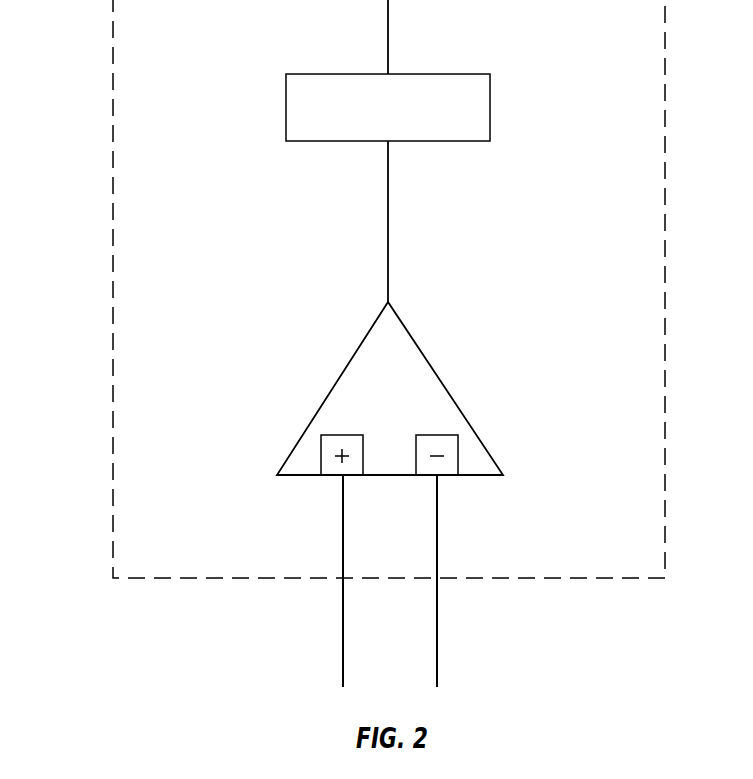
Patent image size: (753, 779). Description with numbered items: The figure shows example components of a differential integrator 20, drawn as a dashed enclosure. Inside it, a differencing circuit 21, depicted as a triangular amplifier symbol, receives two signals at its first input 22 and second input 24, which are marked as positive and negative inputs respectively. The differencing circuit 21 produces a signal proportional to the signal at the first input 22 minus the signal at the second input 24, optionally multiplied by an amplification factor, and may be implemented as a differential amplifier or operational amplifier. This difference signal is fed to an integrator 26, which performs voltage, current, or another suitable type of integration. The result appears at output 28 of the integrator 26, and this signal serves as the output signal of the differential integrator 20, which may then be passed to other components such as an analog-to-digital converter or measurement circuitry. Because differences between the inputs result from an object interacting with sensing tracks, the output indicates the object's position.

The differential integrator 20 is at (110, 250).
The differencing circuit 21 is at (447, 388).
The first input 22 is at (343, 507).
The second input 24 is at (437, 507).
The integrator 26 is at (491, 108).
The output 28 is at (389, 42).